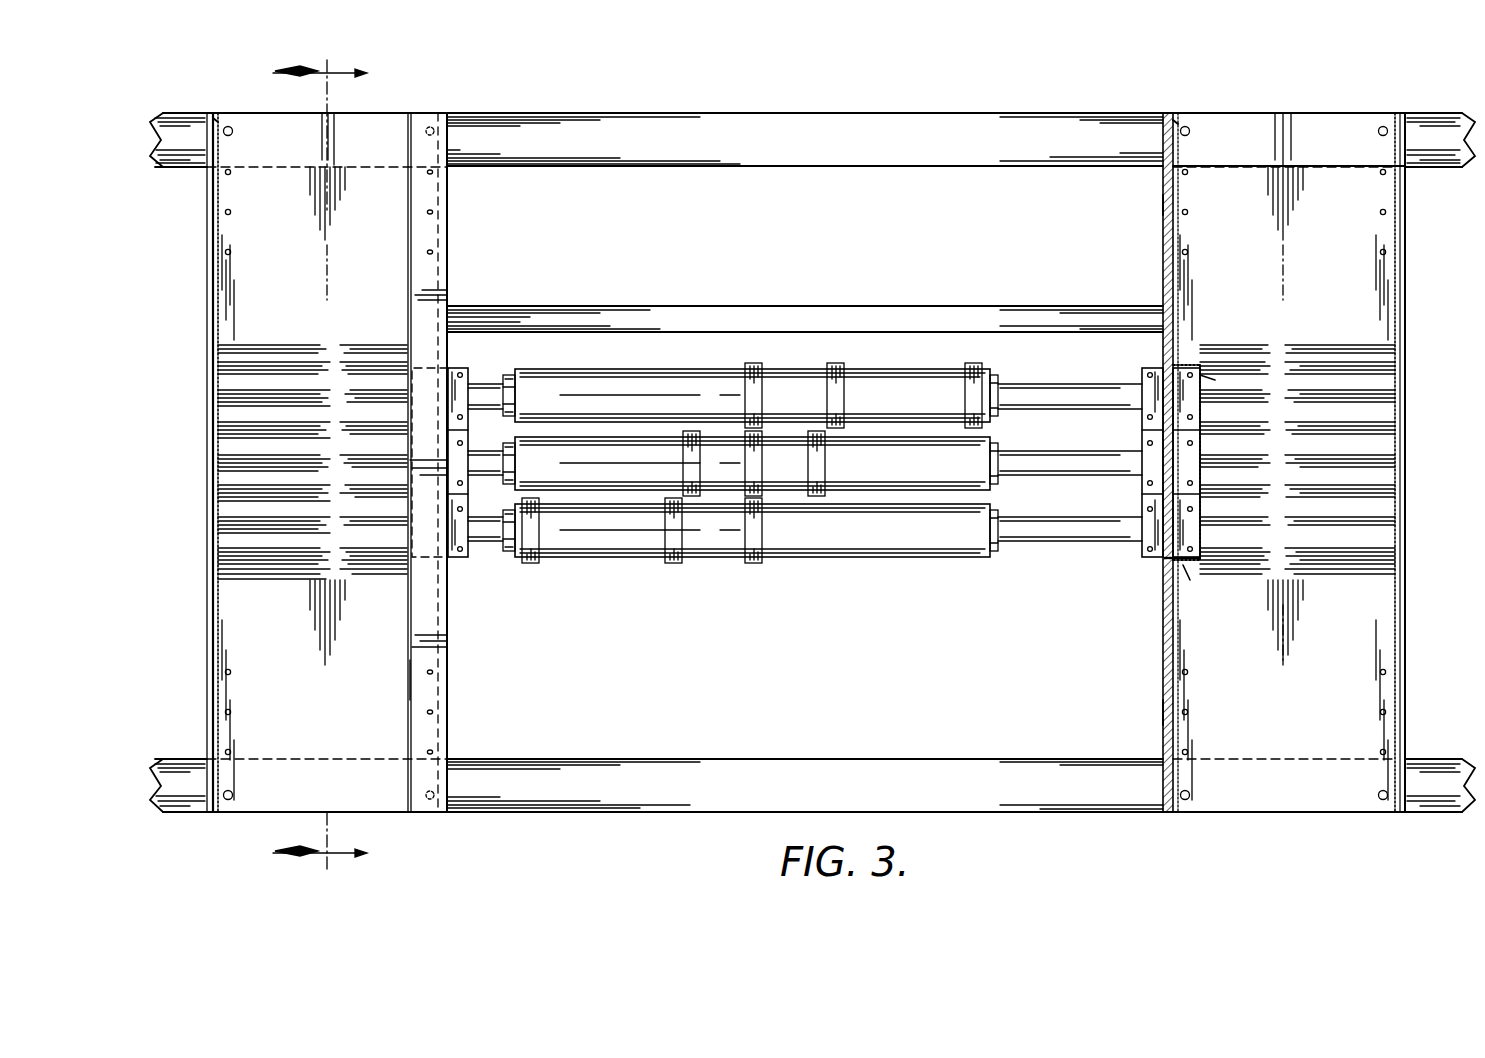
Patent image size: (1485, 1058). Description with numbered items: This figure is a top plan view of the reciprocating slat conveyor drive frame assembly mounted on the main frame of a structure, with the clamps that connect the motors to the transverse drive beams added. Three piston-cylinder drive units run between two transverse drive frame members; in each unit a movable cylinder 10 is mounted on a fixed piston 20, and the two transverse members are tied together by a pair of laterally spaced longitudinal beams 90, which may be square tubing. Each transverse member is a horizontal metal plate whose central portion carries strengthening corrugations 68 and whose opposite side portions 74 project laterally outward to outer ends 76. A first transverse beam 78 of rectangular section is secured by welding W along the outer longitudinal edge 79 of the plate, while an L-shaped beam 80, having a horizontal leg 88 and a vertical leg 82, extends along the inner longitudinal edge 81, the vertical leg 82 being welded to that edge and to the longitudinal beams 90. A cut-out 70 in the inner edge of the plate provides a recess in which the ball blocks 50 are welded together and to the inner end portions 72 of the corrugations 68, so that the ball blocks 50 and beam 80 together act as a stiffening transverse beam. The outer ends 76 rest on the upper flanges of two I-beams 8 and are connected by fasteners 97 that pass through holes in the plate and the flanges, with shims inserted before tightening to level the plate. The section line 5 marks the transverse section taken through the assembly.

The section line 5 is at (335, 466).
The I-beam 8 is at (822, 130).
The cylinder 10 is at (580, 383).
The piston 20 is at (485, 385).
The ball block 50 is at (1142, 372).
The corrugations 68 is at (232, 496).
The cut-out 70 is at (1190, 368).
The inner end portions 72 is at (1165, 560).
The side portions 74 is at (346, 276).
The outer ends 76 is at (388, 126).
The first transverse beam 78 is at (207, 222).
The outer longitudinal edge 79 is at (213, 600).
The transverse beam 80 is at (1163, 205).
The inner longitudinal edge 81 is at (1163, 712).
The vertical leg 82 is at (1163, 237).
The horizontal leg 88 is at (440, 683).
The longitudinal beams 90 is at (652, 322).
The fastener 97 is at (222, 802).
The welding W is at (213, 120).